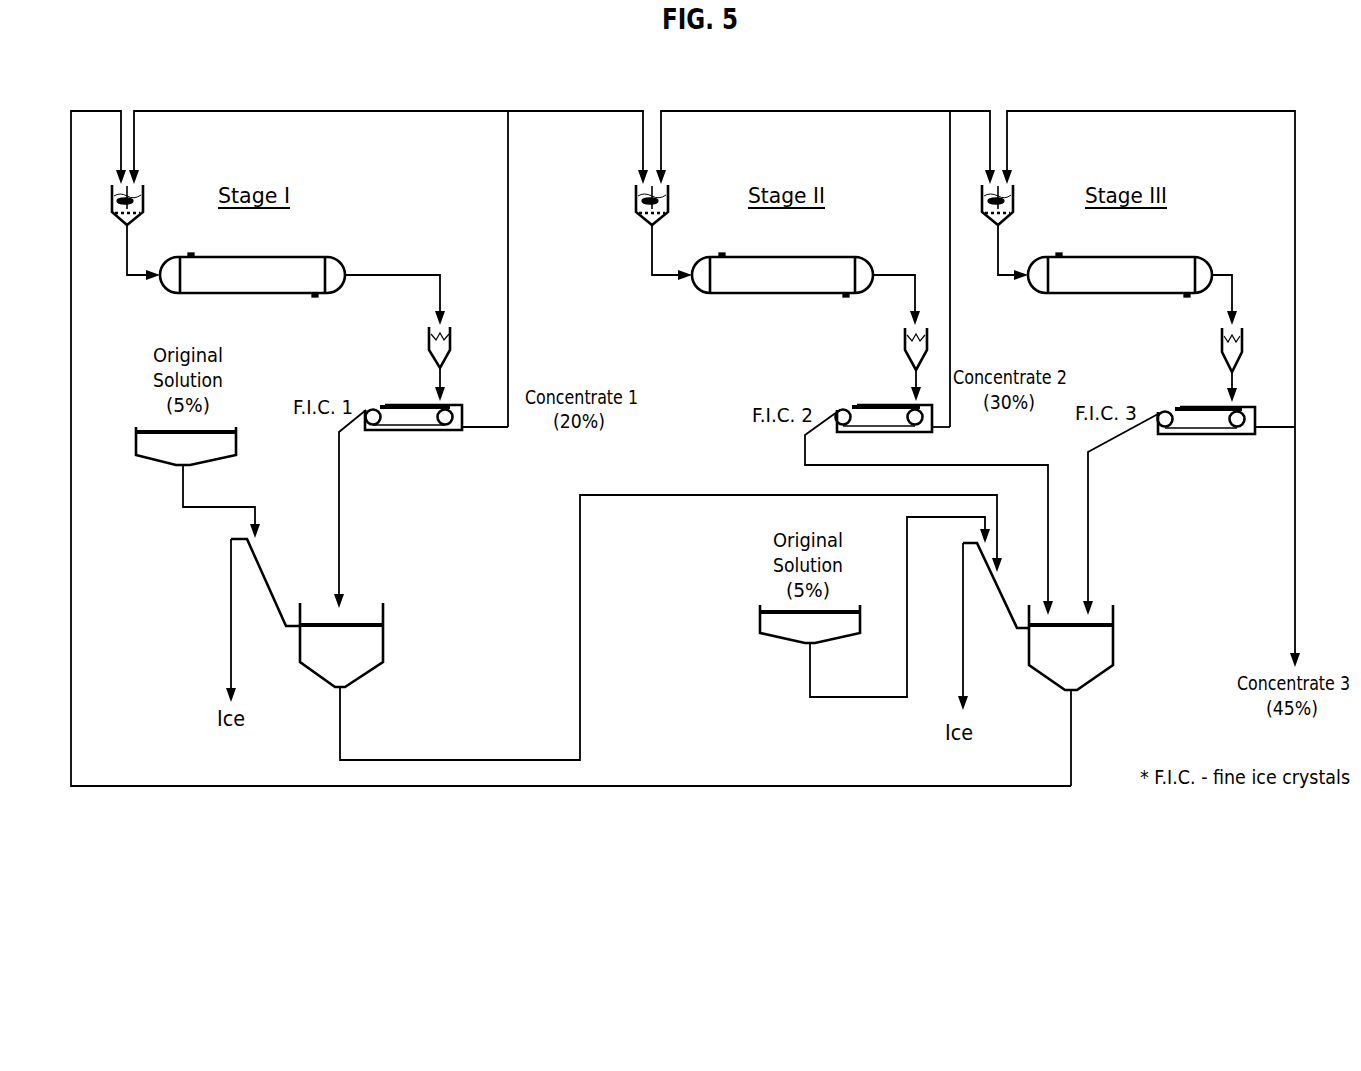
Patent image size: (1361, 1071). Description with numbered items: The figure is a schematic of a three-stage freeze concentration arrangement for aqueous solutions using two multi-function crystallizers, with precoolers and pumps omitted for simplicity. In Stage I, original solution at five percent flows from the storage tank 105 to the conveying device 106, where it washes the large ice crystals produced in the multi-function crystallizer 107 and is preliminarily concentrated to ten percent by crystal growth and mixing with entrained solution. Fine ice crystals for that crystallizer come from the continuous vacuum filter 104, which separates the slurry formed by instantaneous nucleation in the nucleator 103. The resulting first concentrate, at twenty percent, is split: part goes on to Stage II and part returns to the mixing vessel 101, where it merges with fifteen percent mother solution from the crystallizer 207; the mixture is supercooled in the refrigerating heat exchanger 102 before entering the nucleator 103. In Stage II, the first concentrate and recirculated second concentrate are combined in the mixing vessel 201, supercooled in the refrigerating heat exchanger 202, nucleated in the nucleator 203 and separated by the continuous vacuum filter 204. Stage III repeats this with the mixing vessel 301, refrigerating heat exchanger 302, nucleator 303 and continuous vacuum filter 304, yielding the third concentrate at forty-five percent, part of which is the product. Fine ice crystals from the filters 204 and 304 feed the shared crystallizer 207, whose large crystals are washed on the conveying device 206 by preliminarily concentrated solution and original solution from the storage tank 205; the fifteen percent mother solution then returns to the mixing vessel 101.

The mixing vessel 101 is at (143, 196).
The refrigerating heat exchanger 102 is at (232, 287).
The nucleator 103 is at (437, 348).
The continuous vacuum filter 104 is at (405, 430).
The storage tank 105 is at (152, 460).
The conveying device 106 is at (265, 587).
The multi-function crystallizer 107 is at (380, 667).
The mixing vessel 201 is at (634, 217).
The refrigerating heat exchanger 202 is at (750, 283).
The nucleator 203 is at (913, 350).
The continuous vacuum filter 204 is at (868, 410).
The storage tank 205 is at (775, 642).
The conveying device 206 is at (1000, 597).
The multi-function crystallizer 207 is at (1102, 675).
The mixing vessel 301 is at (1013, 203).
The refrigerating heat exchanger 302 is at (1118, 285).
The nucleator 303 is at (1221, 352).
The continuous vacuum filter 304 is at (1198, 420).